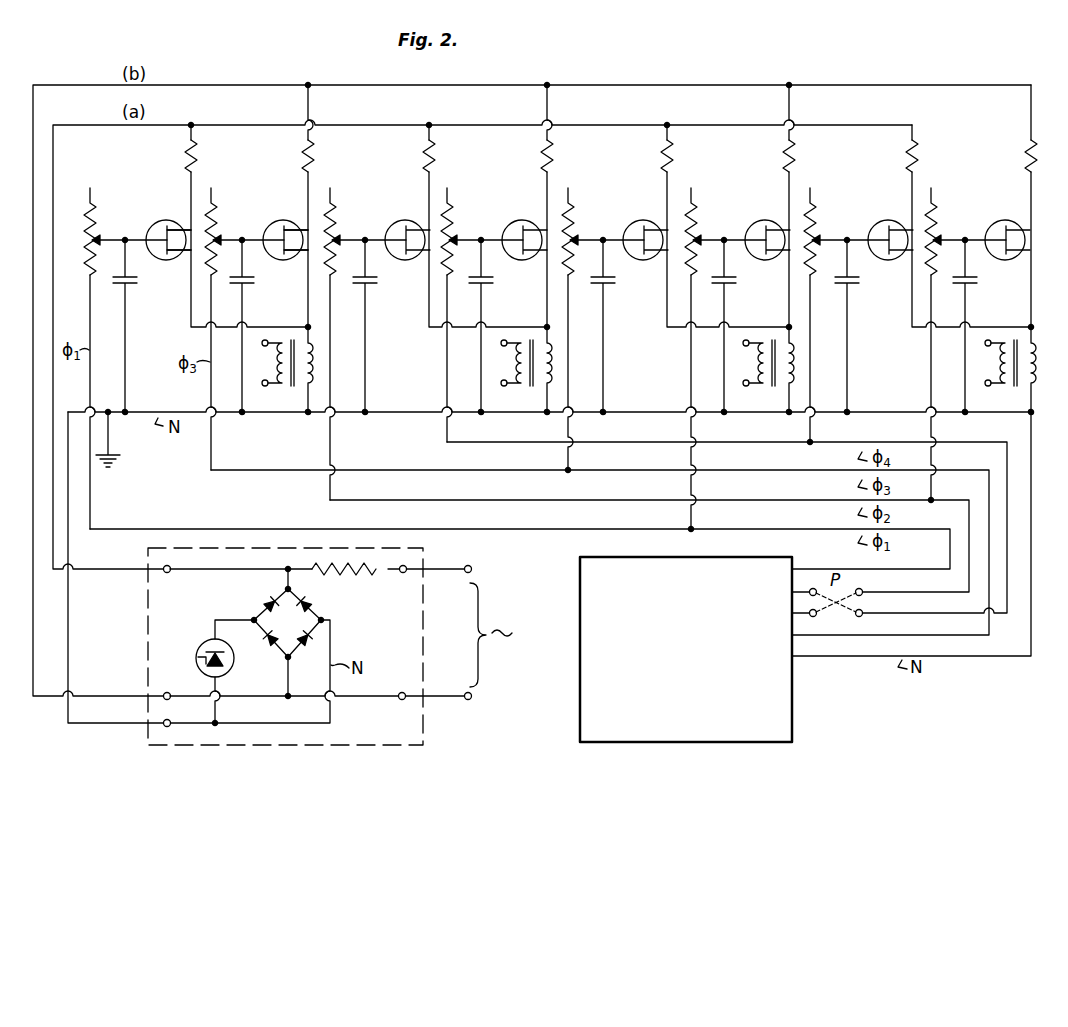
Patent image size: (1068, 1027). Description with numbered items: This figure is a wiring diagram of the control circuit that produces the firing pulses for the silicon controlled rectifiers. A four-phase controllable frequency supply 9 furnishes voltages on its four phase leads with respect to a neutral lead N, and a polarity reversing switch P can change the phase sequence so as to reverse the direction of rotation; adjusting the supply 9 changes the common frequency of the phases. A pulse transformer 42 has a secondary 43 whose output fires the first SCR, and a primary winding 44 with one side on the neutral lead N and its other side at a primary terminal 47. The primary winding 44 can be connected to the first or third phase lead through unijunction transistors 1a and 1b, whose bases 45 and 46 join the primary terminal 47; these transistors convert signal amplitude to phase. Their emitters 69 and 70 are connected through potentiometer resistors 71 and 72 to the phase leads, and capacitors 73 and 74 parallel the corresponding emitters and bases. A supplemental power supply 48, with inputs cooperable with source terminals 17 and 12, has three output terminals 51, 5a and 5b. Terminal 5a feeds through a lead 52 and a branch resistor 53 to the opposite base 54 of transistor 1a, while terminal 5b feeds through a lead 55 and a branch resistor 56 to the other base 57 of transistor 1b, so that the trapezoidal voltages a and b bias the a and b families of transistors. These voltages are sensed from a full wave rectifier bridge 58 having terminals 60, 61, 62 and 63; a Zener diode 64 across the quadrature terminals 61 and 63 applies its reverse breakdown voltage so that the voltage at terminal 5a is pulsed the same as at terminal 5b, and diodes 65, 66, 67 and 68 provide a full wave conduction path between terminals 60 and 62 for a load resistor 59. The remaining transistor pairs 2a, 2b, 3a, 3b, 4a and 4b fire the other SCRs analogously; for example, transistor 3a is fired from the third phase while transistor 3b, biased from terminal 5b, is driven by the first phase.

The lead 55 is at (33, 148).
The lead 52 is at (53, 263).
The branch resistor 53 is at (197, 158).
The branch resistor 56 is at (314, 158).
The potentiometer resistor 71 is at (97, 213).
The potentiometer resistor 72 is at (218, 213).
The unijunction transistor 1a is at (162, 241).
The unijunction transistor 1b is at (280, 241).
The unijunction transistor 2a is at (402, 222).
The unijunction transistor 2b is at (520, 222).
The unijunction transistor 3a is at (640, 222).
The unijunction transistor 3b is at (762, 222).
The unijunction transistor 4a is at (884, 222).
The unijunction transistor 4b is at (1004, 222).
The opposite base 54 is at (173, 222).
The other base 57 is at (291, 222).
The base 45 is at (168, 260).
The base 46 is at (288, 260).
The emitter 69 is at (125, 242).
The emitter 70 is at (243, 246).
The capacitor 73 is at (122, 325).
The capacitor 74 is at (241, 325).
The primary terminal 47 is at (307, 326).
The secondary 43 is at (279, 358).
The primary winding 44 is at (303, 358).
The pulse transformer 42 is at (287, 358).
The supplemental power supply 48 is at (423, 635).
The output terminal Sa 5a is at (168, 573).
The output terminal Sb 5b is at (173, 691).
The output terminal 51 is at (167, 727).
The load resistor 59 is at (370, 573).
The source terminal 17 is at (471, 567).
The source terminal 12 is at (471, 699).
The full wave rectifier bridge 58 is at (297, 621).
The bridge terminal 60 is at (285, 587).
The quadrature terminal 61 is at (253, 618).
The quadrature terminal 63 is at (324, 618).
The bridge terminal 62 is at (285, 660).
The diode 68 is at (267, 599).
The diode 65 is at (314, 597).
The diode 66 is at (264, 638).
The diode 67 is at (303, 649).
The Zener diode 64 is at (208, 645).
The four-phase controllable frequency supply 9 is at (580, 613).